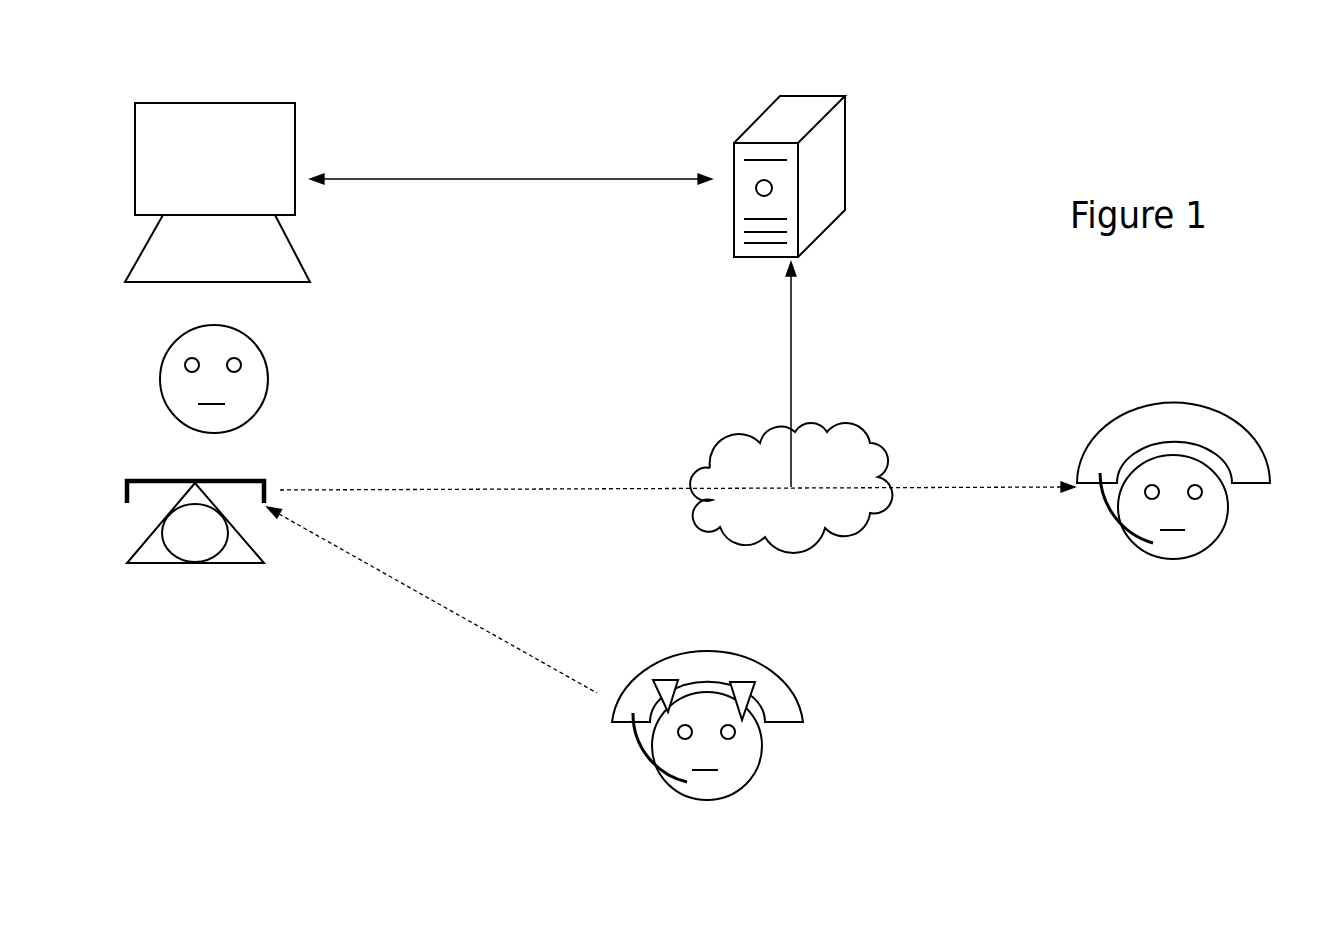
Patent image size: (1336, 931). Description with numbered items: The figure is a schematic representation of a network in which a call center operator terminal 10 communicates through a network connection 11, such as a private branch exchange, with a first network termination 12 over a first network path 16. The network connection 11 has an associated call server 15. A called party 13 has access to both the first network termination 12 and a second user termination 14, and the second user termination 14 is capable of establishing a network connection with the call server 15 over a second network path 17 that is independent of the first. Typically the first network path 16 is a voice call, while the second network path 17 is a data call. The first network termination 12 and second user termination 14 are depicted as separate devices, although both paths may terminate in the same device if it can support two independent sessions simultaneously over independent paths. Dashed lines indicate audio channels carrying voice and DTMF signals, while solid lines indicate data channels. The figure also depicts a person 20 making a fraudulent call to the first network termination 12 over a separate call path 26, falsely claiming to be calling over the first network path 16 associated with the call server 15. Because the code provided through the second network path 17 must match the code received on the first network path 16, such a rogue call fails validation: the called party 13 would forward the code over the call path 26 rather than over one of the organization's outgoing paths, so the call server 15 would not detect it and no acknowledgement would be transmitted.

The call center operator terminal 10 is at (1178, 481).
The network connection 11 is at (791, 407).
The first network termination 12 is at (195, 546).
The called party 13 is at (198, 379).
The second user termination 14 is at (217, 174).
The call server 15 is at (820, 176).
The first network path 16 is at (677, 464).
The second network path 17 is at (511, 160).
The person 20 is at (712, 725).
The call path 26 is at (432, 600).